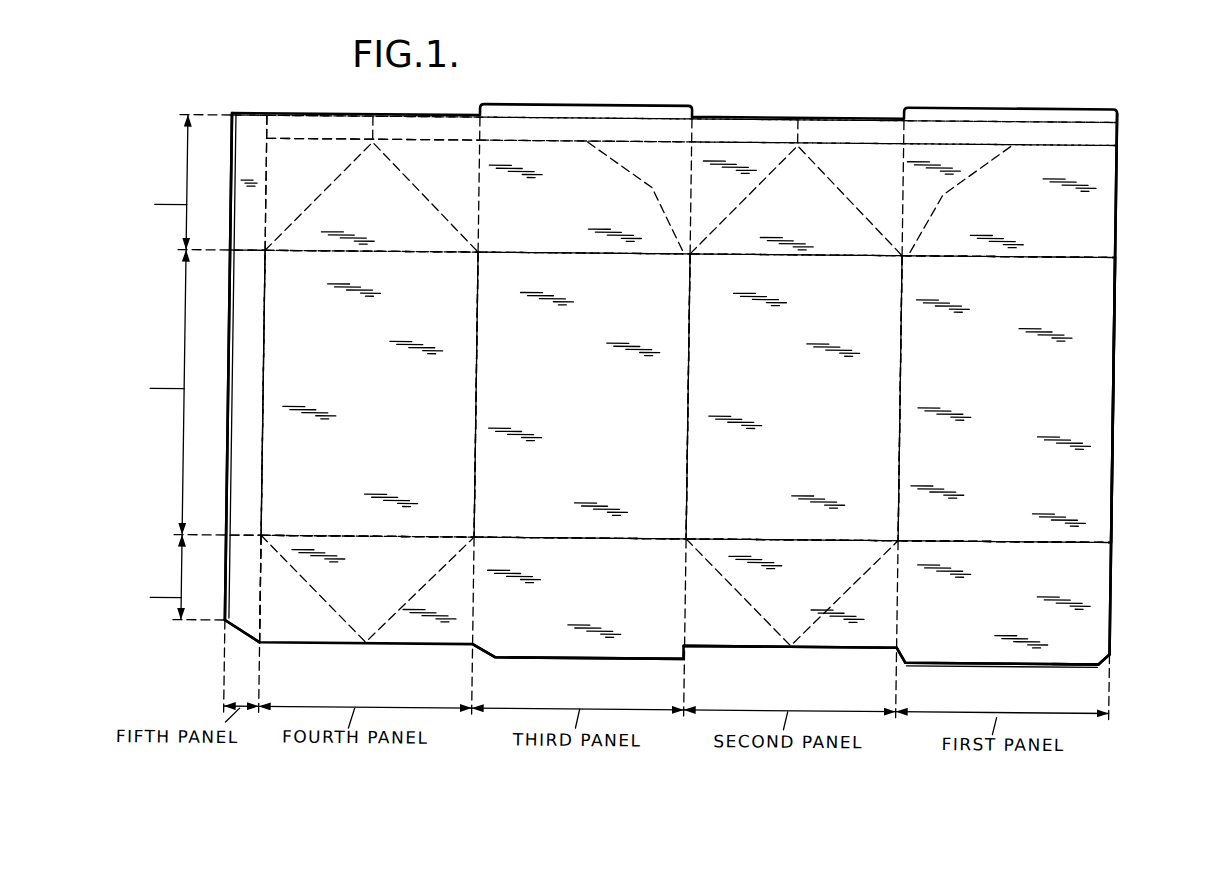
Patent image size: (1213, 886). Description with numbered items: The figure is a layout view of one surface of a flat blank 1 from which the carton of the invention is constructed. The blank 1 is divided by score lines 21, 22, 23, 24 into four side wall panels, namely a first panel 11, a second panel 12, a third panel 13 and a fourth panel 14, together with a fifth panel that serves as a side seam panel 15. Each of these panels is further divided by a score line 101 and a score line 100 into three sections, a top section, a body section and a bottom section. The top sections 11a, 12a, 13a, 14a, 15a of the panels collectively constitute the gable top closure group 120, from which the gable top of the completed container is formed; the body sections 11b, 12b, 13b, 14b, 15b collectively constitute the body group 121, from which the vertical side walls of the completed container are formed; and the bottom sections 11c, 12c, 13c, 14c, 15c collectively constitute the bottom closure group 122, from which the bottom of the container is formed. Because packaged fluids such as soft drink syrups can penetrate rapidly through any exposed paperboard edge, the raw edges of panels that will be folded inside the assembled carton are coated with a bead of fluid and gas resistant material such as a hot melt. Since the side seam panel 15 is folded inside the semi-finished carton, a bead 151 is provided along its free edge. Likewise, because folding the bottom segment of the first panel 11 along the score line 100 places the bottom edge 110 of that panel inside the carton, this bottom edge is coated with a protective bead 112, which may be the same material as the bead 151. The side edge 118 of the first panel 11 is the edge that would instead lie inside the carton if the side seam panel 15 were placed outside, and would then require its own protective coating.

The flat blank 1 is at (1139, 386).
The first panel 11 is at (999, 399).
The top section of first panel 11a is at (1002, 216).
The body section of first panel 11b is at (996, 466).
The bottom section of first panel 11c is at (995, 603).
The second panel 12 is at (786, 395).
The top section of second panel 12a is at (785, 220).
The body section of second panel 12b is at (788, 468).
The bottom section of second panel 12c is at (781, 595).
The third panel 13 is at (569, 390).
The top section of third panel 13a is at (560, 217).
The body section of third panel 13b is at (571, 463).
The bottom section of third panel 13c is at (568, 597).
The fourth panel 14 is at (359, 389).
The top section of fourth panel 14a is at (357, 220).
The body section of fourth panel 14b is at (359, 462).
The bottom section of fourth panel 14c is at (359, 590).
The side seam panel 15 is at (251, 410).
The top section of side seam panel 15a is at (250, 147).
The body section of side seam panel 15b is at (241, 323).
The bottom section of side seam panel 15c is at (247, 618).
The bead 151 is at (237, 476).
The score line 21 is at (904, 359).
The score line 22 is at (692, 358).
The score line 23 is at (480, 354).
The score line 24 is at (267, 350).
The score line 100 is at (999, 536).
The score line 101 is at (1012, 256).
The bottom edge 110 is at (953, 656).
The protective bead 112 is at (1051, 661).
The side edge 118 is at (1118, 312).
The gable top closure group 120 is at (122, 182).
The body group 121 is at (131, 392).
The bottom closure group 122 is at (124, 580).